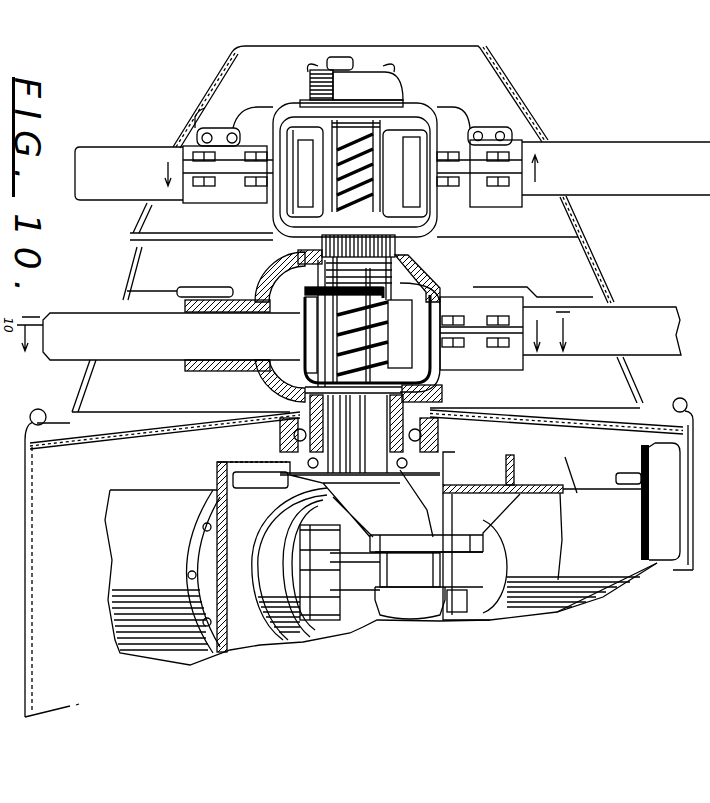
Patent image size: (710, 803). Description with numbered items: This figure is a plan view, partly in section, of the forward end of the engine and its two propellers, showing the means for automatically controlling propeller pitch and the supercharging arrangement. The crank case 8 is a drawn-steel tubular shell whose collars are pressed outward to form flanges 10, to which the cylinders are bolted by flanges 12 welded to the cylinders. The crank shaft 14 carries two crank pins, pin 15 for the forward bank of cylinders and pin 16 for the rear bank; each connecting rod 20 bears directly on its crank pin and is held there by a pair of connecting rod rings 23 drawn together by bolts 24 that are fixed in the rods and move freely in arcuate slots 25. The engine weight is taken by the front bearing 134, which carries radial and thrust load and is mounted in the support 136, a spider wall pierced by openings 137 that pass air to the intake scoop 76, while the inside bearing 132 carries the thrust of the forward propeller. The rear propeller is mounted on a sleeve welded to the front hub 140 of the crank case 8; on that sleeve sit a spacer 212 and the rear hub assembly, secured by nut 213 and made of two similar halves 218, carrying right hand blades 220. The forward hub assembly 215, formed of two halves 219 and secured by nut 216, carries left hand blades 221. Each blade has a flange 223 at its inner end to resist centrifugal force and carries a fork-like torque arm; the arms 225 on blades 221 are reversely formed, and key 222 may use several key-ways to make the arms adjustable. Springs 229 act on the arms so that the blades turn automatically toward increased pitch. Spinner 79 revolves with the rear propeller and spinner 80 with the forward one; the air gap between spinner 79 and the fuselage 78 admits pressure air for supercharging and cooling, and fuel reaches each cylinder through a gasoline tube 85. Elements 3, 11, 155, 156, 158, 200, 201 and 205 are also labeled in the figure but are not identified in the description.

The pump housing 3 is at (140, 497).
The crank case 8 is at (473, 485).
The flanges 10 is at (190, 565).
The lower housing 11 is at (575, 405).
The cylinder flanges 12 is at (178, 567).
The crank shaft 14 is at (426, 524).
The crank pin 15 is at (404, 598).
The crank pin 16 is at (521, 605).
The connecting rod 20 is at (429, 569).
The connecting rod rings 23 is at (368, 605).
The bolts 24 is at (355, 571).
The arcuate slots 25 is at (316, 568).
The intake scoop 76 is at (660, 566).
The engine housing or fuselage 78 is at (25, 632).
The spinner 79 is at (88, 362).
The second spinner 80 is at (202, 67).
The gasoline tube 85 is at (616, 476).
The inside bearing 132 is at (360, 503).
The front bearing 134 is at (404, 431).
The support 136 is at (218, 466).
The openings 137 is at (62, 423).
The front hub 140 is at (360, 434).
The left plate 155 is at (305, 172).
The shaft sleeve 156 is at (368, 433).
The left bearing 158 is at (278, 438).
The bracket 200 is at (497, 98).
The tier plate 201 is at (183, 288).
The flange block 205 is at (230, 126).
The spacer 212 is at (466, 372).
The nut 213 is at (337, 336).
The forward propeller hub assembly 215 is at (432, 112).
The nut 216 is at (392, 96).
The hub halves 218 is at (480, 360).
The hub halves 219 is at (462, 138).
The right hand propeller blades 220 is at (86, 322).
The left hand propeller blades 221 is at (108, 158).
The key 222 is at (268, 286).
The flange 223 is at (405, 239).
The torque arms 225 is at (303, 103).
The springs 229 is at (366, 166).